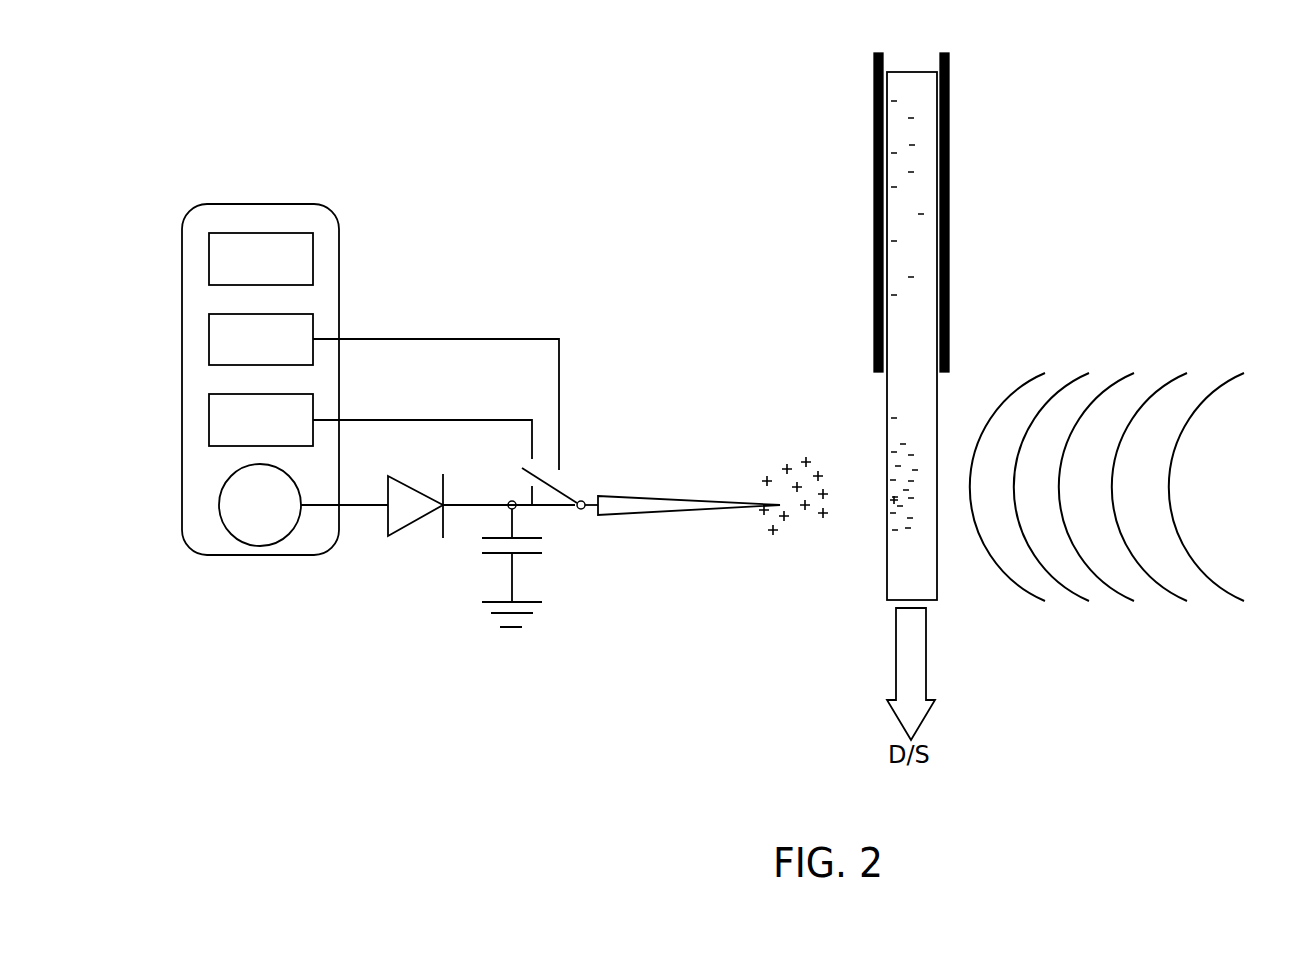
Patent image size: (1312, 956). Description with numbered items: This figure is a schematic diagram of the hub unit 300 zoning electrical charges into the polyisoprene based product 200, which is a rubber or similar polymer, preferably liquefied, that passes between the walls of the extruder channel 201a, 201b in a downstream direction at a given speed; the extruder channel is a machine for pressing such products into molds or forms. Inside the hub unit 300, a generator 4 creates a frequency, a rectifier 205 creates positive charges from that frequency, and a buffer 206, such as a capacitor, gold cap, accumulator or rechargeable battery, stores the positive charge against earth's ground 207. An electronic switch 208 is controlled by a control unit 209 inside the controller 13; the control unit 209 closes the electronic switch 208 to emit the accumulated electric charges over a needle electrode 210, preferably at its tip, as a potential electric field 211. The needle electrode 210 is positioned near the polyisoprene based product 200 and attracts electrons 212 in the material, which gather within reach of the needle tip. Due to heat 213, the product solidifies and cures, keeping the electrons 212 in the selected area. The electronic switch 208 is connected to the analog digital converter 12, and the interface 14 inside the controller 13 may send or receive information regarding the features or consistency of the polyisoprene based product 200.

The hub unit 300 is at (177, 110).
The controller 13 is at (182, 222).
The interface 14 is at (225, 266).
The control unit 209 is at (225, 345).
The analog digital converter 12 is at (225, 425).
The generator 4 is at (260, 532).
The rectifier 205 is at (423, 497).
The buffer 206 is at (538, 547).
The earth's ground 207 is at (533, 614).
The electronic switch 208 is at (583, 510).
The needle electrode 210 is at (676, 497).
The potential electric field 211 is at (803, 460).
The polyisoprene based product 200 is at (900, 80).
The extruder channel 201a is at (950, 132).
The extruder channel 201b is at (873, 132).
The electrons 212 is at (893, 507).
The heat 213 is at (1165, 530).